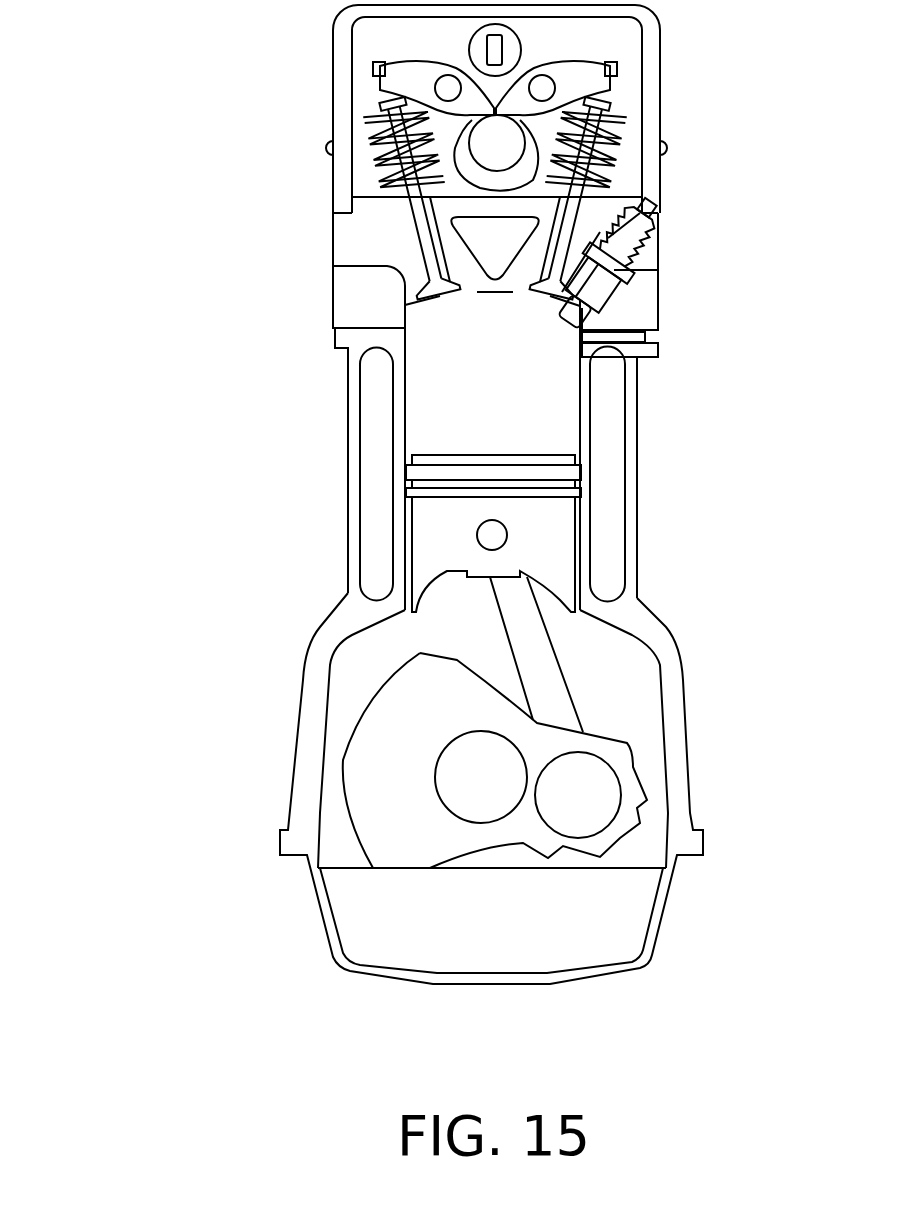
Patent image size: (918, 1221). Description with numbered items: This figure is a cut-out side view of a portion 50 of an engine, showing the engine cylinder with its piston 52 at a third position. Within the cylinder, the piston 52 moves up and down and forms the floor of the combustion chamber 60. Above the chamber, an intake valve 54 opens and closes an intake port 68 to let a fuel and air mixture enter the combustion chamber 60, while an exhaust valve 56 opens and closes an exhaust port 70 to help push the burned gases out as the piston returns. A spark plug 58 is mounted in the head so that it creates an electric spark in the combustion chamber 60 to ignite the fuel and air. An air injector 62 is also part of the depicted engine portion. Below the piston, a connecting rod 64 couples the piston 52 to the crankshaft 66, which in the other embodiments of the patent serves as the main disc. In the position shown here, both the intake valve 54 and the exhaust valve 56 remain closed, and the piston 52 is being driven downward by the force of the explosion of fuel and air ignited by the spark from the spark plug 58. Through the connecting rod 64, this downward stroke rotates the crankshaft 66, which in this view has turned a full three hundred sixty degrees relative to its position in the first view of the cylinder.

The portion of an engine 50 is at (123, 88).
The piston 52 is at (507, 527).
The intake valve 54 is at (382, 73).
The exhaust valve 56 is at (610, 73).
The spark plug 58 is at (578, 242).
The combustion chamber 60 is at (493, 420).
The air injector 62 is at (637, 342).
The connecting rod 64 is at (490, 665).
The crankshaft 66 is at (498, 763).
The intake port 68 is at (350, 237).
The exhaust port 70 is at (645, 251).